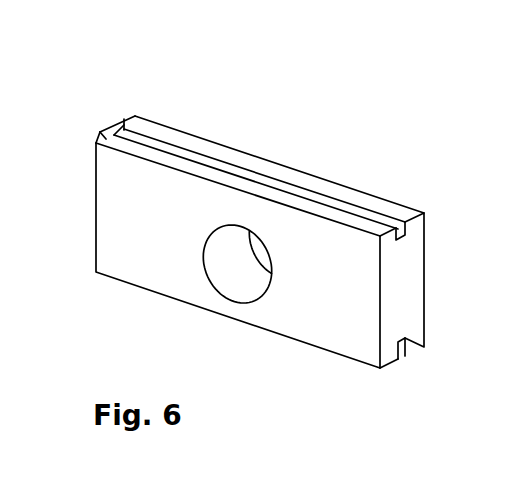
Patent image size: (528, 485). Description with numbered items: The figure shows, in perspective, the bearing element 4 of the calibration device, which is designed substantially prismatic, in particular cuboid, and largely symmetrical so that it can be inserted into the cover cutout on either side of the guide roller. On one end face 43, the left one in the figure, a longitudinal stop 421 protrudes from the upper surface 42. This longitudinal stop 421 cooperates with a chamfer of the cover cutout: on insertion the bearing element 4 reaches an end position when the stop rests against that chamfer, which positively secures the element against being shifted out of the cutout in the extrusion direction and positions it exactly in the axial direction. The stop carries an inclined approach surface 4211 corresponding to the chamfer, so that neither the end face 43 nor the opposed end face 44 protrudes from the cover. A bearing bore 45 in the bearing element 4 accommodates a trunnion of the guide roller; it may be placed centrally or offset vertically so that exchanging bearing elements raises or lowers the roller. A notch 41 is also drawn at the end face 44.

The bearing element 4 is at (303, 146).
The notch 41 is at (372, 215).
The upper surface 42 is at (242, 154).
The longitudinal stop 421 is at (125, 121).
The inclined approach surface 4211 is at (112, 131).
The end face 43 is at (94, 223).
The opposed end face 44 is at (412, 284).
The bearing bore 45 is at (236, 290).